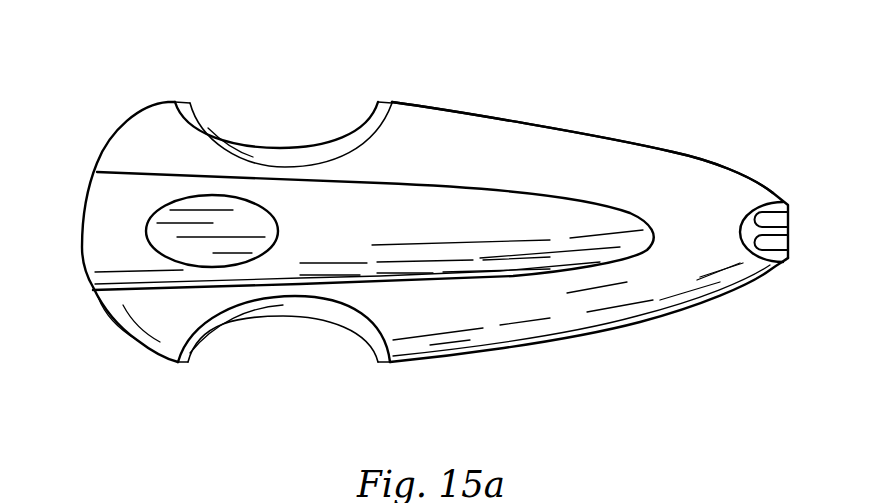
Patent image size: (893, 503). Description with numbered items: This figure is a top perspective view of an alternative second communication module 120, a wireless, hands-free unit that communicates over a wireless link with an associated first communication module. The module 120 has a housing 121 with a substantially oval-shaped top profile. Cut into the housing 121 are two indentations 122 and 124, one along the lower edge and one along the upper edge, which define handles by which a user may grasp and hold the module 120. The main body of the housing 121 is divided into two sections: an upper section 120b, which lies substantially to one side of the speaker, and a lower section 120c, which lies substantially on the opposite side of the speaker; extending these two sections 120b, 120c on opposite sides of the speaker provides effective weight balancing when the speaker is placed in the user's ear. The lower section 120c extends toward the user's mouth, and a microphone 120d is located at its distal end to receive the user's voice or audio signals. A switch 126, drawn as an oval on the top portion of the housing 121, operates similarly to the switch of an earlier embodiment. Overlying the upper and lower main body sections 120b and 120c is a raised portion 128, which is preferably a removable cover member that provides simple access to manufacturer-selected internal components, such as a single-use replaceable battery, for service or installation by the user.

The alternative second communication module 120 is at (428, 224).
The housing 121 is at (563, 148).
The indentation 122 is at (223, 334).
The indentation 124 is at (241, 135).
The switch 126 is at (243, 263).
The raised portion 128 is at (502, 284).
The upper section 120b is at (72, 302).
The lower section 120c is at (611, 336).
The microphone 120d is at (789, 280).